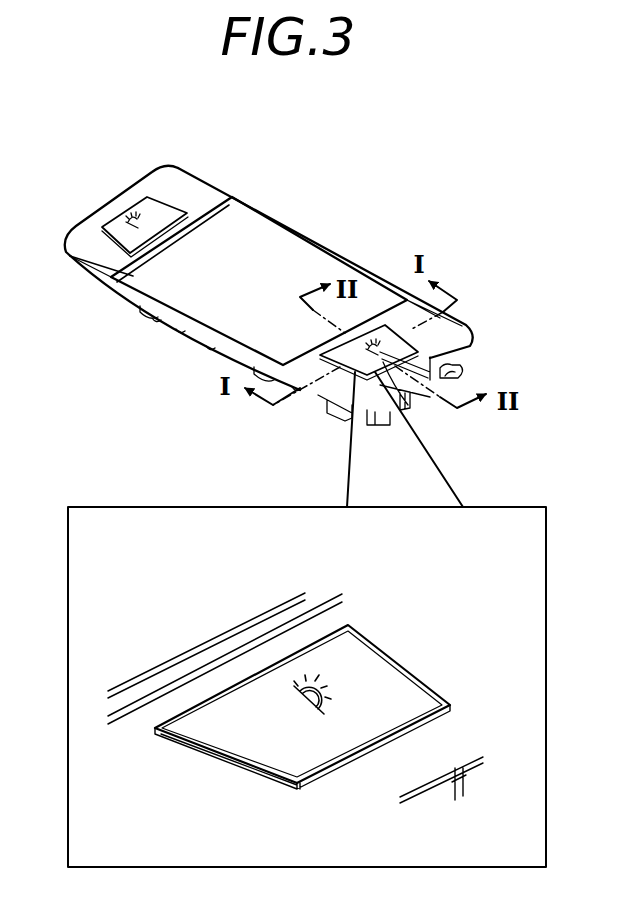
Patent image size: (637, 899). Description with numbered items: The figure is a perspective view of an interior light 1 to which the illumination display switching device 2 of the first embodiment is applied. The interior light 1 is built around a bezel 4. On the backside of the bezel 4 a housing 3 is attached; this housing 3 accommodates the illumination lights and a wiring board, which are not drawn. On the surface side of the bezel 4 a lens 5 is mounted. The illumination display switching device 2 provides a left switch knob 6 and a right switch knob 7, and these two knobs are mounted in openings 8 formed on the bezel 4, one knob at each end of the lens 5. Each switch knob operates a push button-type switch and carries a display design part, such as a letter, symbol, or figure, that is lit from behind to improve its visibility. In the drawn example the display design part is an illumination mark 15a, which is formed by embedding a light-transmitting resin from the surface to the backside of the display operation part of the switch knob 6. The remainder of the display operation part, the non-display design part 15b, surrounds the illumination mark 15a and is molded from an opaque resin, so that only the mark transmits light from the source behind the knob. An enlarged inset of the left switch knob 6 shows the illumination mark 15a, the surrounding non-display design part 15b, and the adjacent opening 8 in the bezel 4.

The interior light 1 is at (313, 193).
The illumination display switching device 2 is at (143, 190).
The housing 3 is at (440, 380).
The bezel 4 is at (438, 330).
The lens 5 is at (310, 260).
The left switch knob 6 is at (370, 363).
The right switch knob 7 is at (157, 203).
The openings 8 is at (112, 240).
The illumination mark 15a is at (297, 684).
The non-display design part 15b is at (383, 667).